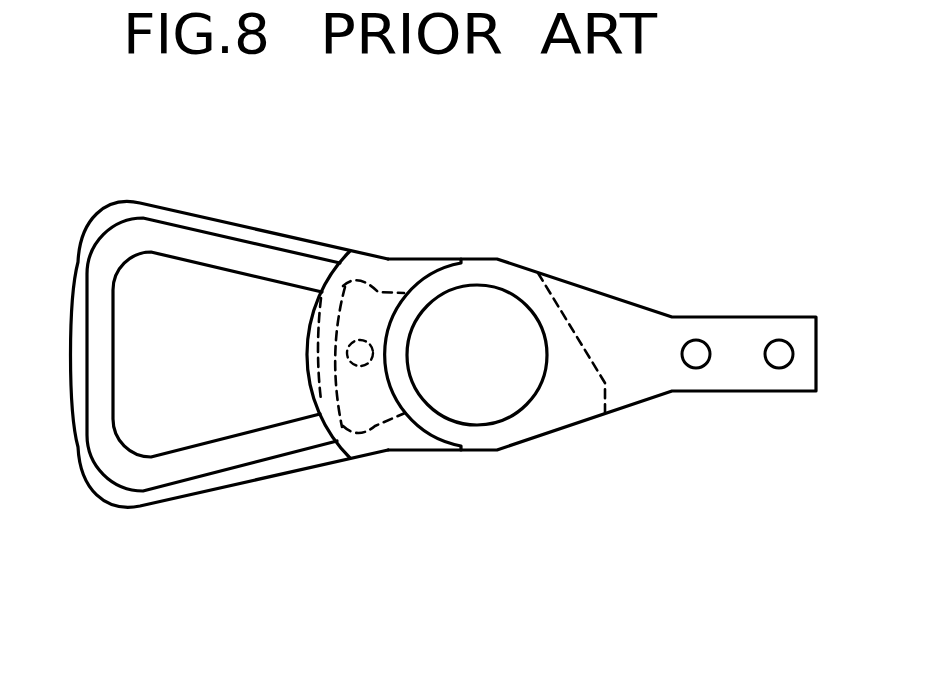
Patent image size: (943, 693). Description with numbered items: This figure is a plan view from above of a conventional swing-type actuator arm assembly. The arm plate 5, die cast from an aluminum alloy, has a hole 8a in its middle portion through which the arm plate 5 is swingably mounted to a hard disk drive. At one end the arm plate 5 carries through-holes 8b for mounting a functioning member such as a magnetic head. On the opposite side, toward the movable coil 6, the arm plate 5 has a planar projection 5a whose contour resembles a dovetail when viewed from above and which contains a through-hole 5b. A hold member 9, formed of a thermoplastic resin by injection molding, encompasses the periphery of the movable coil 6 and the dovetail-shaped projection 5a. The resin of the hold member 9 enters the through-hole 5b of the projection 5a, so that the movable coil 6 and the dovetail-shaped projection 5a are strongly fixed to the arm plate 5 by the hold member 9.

The arm plate 5 is at (623, 327).
The planar projection 5a is at (368, 402).
The through-hole 5b is at (357, 350).
The movable coil 6 is at (212, 458).
The hole 8a is at (480, 308).
The through-holes 8b is at (783, 356).
The hold member 9 is at (365, 262).